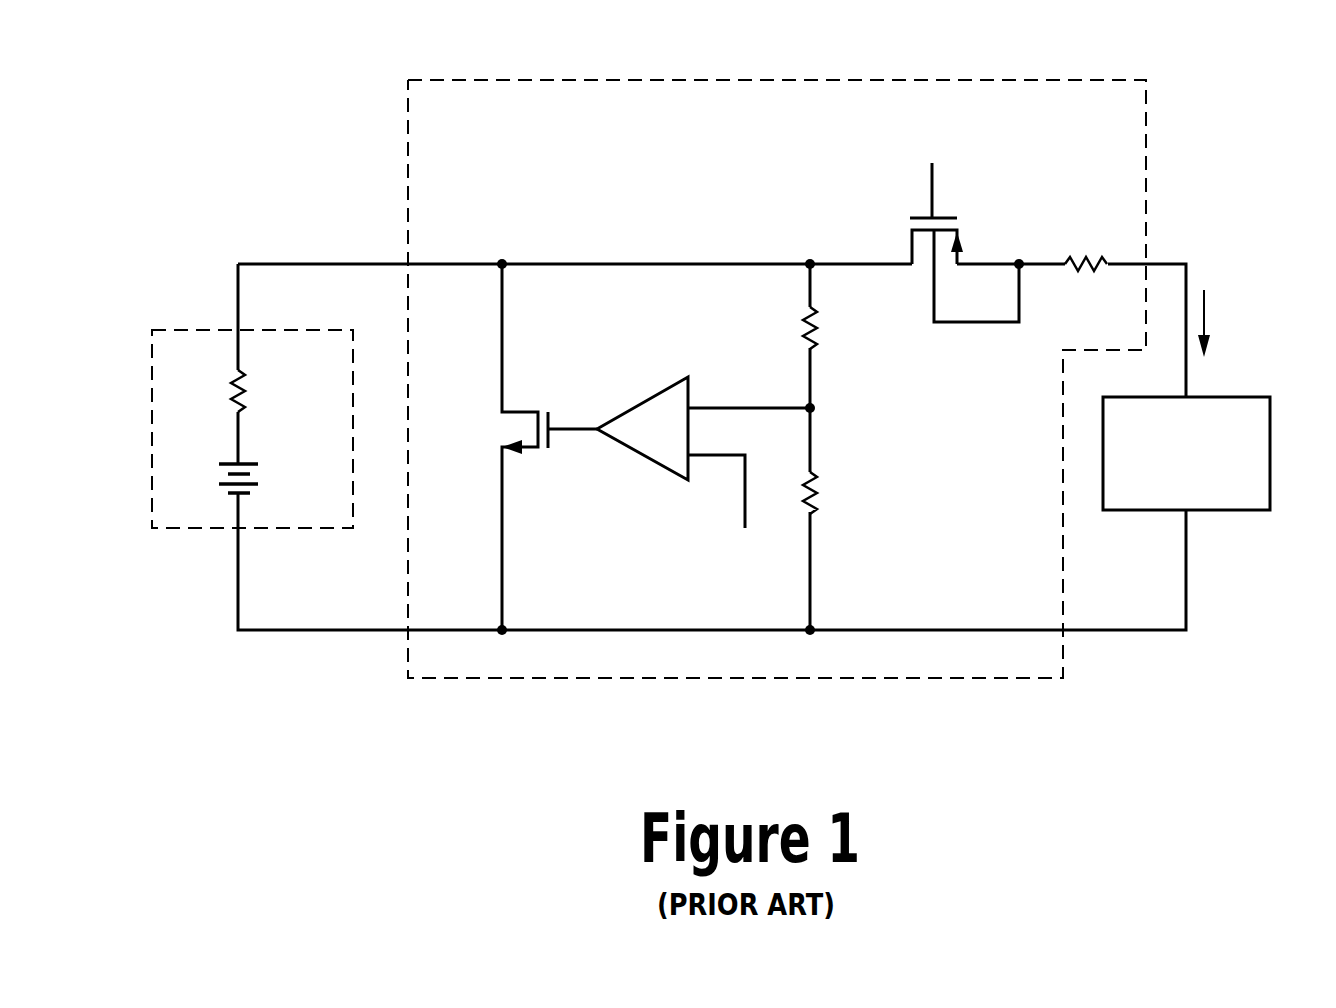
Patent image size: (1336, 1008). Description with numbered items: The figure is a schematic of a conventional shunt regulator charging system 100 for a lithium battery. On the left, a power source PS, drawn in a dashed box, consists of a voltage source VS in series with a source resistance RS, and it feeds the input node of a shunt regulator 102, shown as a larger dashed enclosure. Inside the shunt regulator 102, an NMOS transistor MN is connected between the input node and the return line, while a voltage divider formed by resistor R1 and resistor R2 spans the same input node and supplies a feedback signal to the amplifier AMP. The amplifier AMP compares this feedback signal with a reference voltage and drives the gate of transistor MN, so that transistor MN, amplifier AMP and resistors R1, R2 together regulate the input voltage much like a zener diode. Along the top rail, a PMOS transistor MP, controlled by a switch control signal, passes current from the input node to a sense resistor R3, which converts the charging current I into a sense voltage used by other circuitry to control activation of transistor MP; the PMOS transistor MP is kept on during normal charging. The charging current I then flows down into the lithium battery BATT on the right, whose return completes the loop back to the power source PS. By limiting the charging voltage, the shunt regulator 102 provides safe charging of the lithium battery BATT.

The prior art battery charging circuit 100 is at (304, 96).
The shunt regulator 102 is at (1146, 117).
The power source PS is at (205, 530).
The source resistance RS is at (265, 391).
The voltage source VS is at (259, 482).
The resistor R1 is at (837, 329).
The resistor R2 is at (835, 494).
The resistor R3 is at (1086, 286).
The NMOS transistor MN is at (526, 447).
The PMOS transistor MP is at (964, 265).
The amplifier AMP is at (641, 400).
The charging current I is at (1217, 323).
The lithium battery BATT is at (1223, 510).